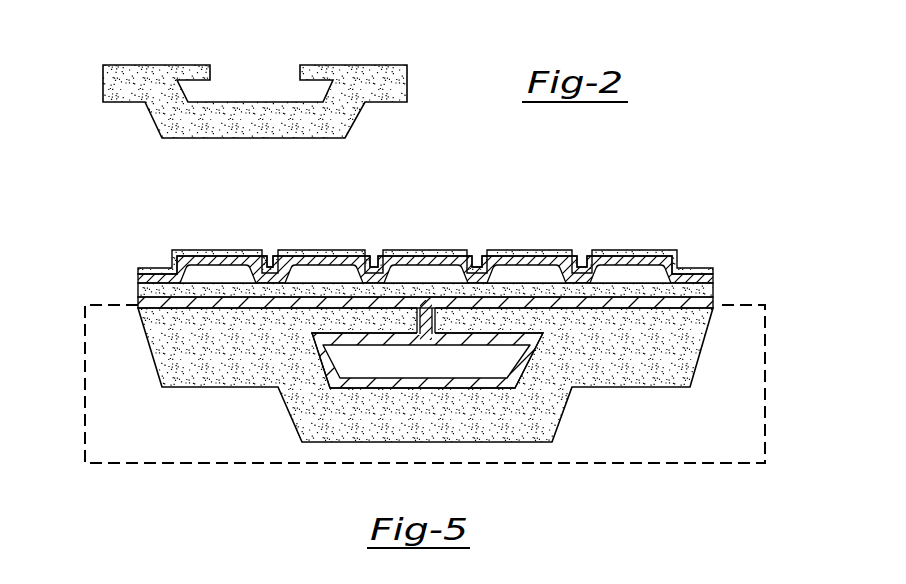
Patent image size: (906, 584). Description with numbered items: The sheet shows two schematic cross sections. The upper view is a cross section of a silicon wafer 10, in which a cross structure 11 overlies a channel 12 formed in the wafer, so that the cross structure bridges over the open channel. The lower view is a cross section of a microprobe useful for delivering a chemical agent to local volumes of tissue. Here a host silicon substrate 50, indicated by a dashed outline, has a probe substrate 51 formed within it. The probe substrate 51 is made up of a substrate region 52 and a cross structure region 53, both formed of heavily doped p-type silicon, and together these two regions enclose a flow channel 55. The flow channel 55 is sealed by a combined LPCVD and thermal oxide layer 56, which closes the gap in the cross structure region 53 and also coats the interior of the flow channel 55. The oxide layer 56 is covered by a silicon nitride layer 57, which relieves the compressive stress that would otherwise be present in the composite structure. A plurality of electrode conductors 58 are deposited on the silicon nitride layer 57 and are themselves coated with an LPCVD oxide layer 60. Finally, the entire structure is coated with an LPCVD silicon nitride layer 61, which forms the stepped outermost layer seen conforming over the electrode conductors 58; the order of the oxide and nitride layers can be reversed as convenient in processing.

In FIG. 2, the silicon wafer 10 is at (103, 103).
In FIG. 2, the cross structure 11 is at (194, 65).
In FIG. 2, the channel 12 is at (258, 86).
In FIG. 5, the host silicon substrate 50 is at (183, 455).
In FIG. 5, the probe substrate 51 is at (557, 417).
In FIG. 5, the substrate region 52 is at (316, 362).
In FIG. 5, the cross structure region 53 is at (225, 318).
In FIG. 5, the flow channel 55 is at (413, 366).
In FIG. 5, the LPCVD/thermal oxide layer 56 is at (628, 303).
In FIG. 5, the silicon nitride layer 57 is at (724, 290).
In FIG. 5, the electrode conductors 58 is at (230, 268).
In FIG. 5, the LPCVD oxide layer 60 is at (510, 259).
In FIG. 5, the LPCVD silicon nitride layer 61 is at (690, 260).